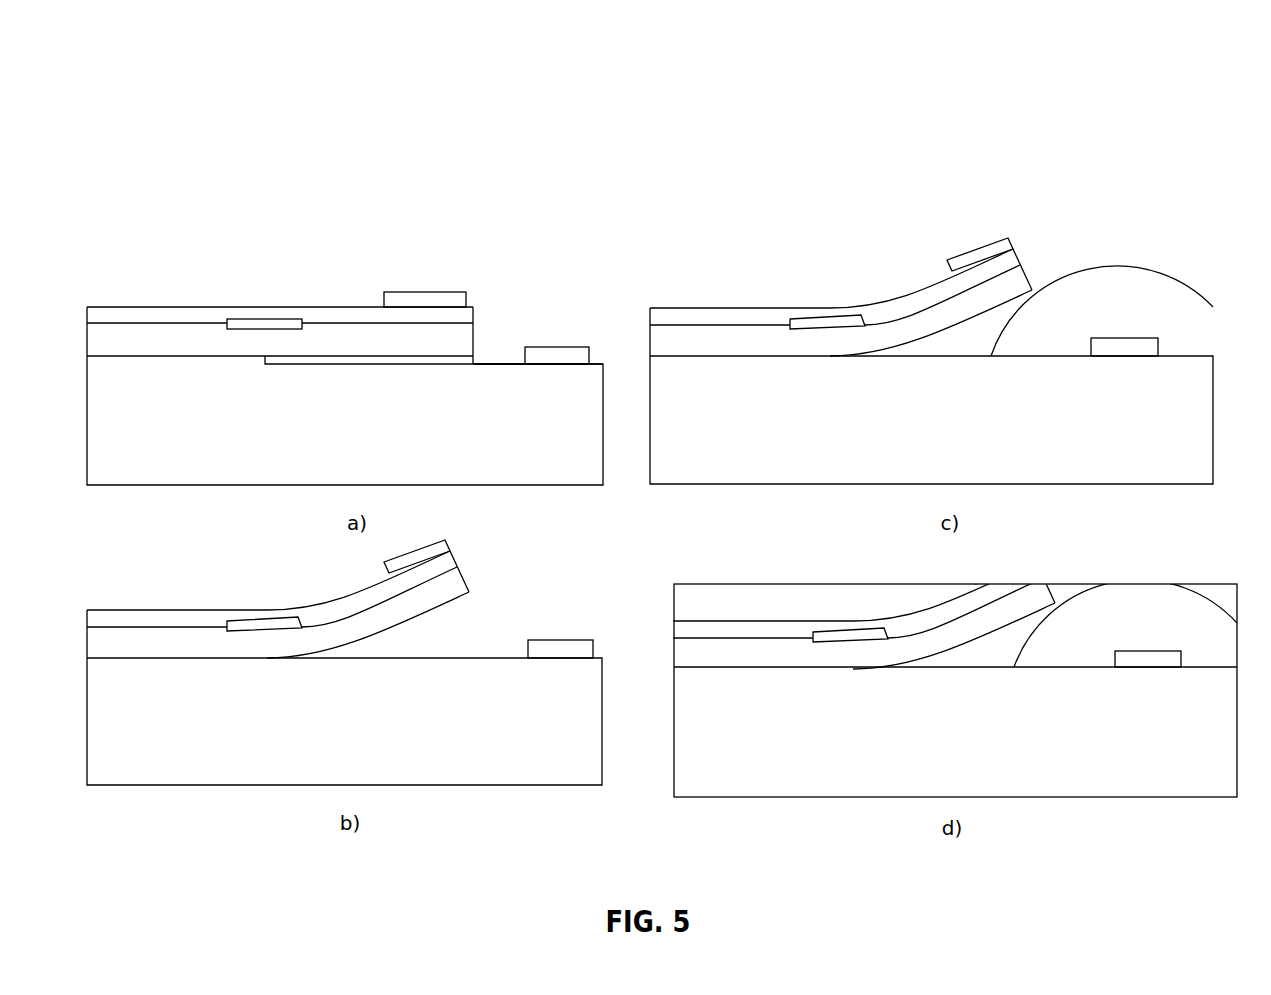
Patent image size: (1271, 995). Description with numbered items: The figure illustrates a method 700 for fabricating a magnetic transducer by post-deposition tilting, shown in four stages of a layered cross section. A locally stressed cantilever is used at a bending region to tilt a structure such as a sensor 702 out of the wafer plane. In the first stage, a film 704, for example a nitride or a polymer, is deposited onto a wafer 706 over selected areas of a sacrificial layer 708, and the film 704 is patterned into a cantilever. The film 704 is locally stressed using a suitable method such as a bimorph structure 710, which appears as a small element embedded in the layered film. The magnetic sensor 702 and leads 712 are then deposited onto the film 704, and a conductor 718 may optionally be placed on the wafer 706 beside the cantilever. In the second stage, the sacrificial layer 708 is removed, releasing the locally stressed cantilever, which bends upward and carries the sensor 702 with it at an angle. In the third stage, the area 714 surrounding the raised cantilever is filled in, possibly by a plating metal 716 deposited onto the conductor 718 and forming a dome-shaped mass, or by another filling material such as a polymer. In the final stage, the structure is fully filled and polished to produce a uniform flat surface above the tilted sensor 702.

The method 700 is at (938, 269).
The sensor 702 is at (430, 292).
The film 704 is at (476, 341).
The wafer 706 is at (512, 348).
The sacrificial layer 708 is at (352, 364).
The bimorph structure 710 is at (262, 319).
The leads 712 is at (146, 307).
The area 714 is at (468, 620).
The plating metal 716 is at (1132, 262).
The conductor 718 is at (578, 347).